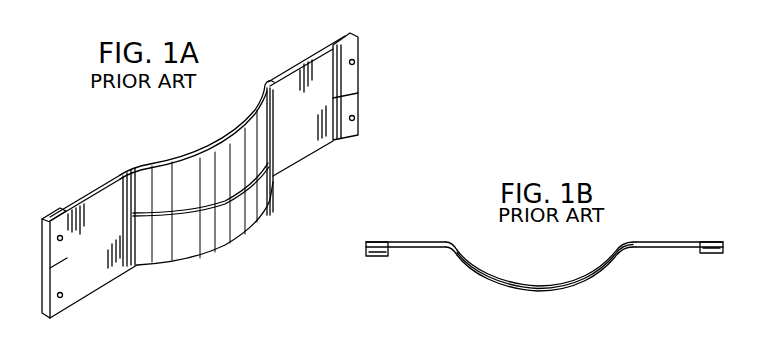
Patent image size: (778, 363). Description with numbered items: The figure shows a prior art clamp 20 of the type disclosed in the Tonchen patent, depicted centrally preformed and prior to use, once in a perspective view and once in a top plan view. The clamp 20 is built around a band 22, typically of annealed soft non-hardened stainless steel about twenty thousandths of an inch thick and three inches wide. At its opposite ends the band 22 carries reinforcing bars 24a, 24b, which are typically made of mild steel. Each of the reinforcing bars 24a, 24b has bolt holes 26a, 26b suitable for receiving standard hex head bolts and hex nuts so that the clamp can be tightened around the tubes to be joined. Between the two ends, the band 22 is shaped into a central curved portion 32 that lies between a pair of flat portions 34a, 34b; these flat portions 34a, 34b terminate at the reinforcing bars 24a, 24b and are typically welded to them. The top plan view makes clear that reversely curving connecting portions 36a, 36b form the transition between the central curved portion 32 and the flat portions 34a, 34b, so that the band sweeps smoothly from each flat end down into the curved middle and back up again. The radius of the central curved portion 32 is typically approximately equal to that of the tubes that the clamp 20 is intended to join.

In FIG. 1A, the clamp 20 is at (152, 145).
In FIG. 1B, the clamp 20 is at (537, 280).
In FIG. 1A, the band 22 is at (200, 249).
In FIG. 1B, the band 22 is at (493, 282).
In FIG. 1A, the reinforcing bar 24a is at (50, 213).
In FIG. 1B, the reinforcing bar 24a is at (377, 254).
In FIG. 1A, the reinforcing bar 24b is at (355, 37).
In FIG. 1B, the reinforcing bar 24b is at (706, 254).
In FIG. 1A, the bolt hole 26a is at (64, 237).
In FIG. 1A, the bolt hole 26b is at (355, 63).
In FIG. 1A, the central curved portion 32 is at (249, 236).
In FIG. 1B, the central curved portion 32 is at (553, 296).
In FIG. 1A, the flat portion 34a is at (100, 273).
In FIG. 1B, the flat portion 34a is at (419, 241).
In FIG. 1A, the flat portion 34b is at (308, 141).
In FIG. 1B, the flat portion 34b is at (674, 241).
In FIG. 1A, the reversely curving connecting portion 36a is at (133, 266).
In FIG. 1B, the reversely curving connecting portion 36a is at (447, 248).
In FIG. 1A, the reversely curving connecting portion 36b is at (268, 82).
In FIG. 1B, the reversely curving connecting portion 36b is at (637, 248).